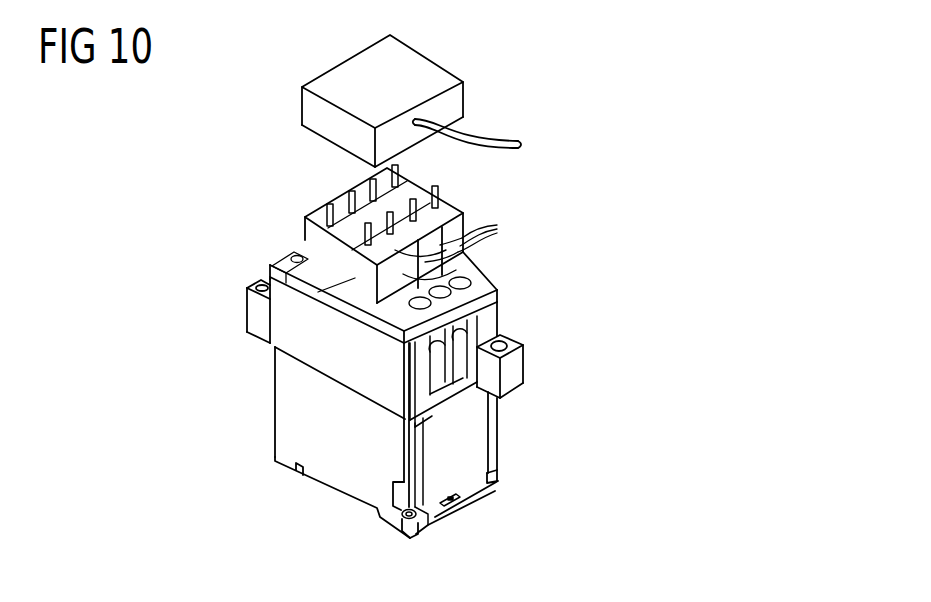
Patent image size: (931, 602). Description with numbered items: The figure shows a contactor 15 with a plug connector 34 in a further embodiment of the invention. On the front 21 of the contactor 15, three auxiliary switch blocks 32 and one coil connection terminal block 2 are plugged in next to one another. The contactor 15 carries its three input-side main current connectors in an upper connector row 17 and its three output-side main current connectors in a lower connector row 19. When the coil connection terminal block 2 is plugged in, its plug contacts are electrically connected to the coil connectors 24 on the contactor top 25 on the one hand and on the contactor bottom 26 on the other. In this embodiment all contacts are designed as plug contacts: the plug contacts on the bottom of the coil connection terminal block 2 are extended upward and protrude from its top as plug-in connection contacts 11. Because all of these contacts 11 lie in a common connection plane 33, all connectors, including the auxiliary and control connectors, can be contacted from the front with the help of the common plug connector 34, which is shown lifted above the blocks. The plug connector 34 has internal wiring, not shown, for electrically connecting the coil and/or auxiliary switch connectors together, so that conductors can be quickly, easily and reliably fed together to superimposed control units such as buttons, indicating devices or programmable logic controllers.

The coil connection terminal block 2 is at (386, 257).
The plug-in connection contacts 11 is at (316, 265).
The contactor 15 is at (577, 223).
The upper connector row 17 is at (293, 253).
The lower connector row 19 is at (482, 275).
The front 21 is at (308, 265).
The coil connectors 24 is at (258, 313).
The contactor top 25 is at (268, 410).
The contactor bottom 26 is at (452, 460).
The auxiliary switch blocks 32 is at (477, 239).
The common connection plane 33 is at (412, 193).
The plug connector 34 is at (412, 75).